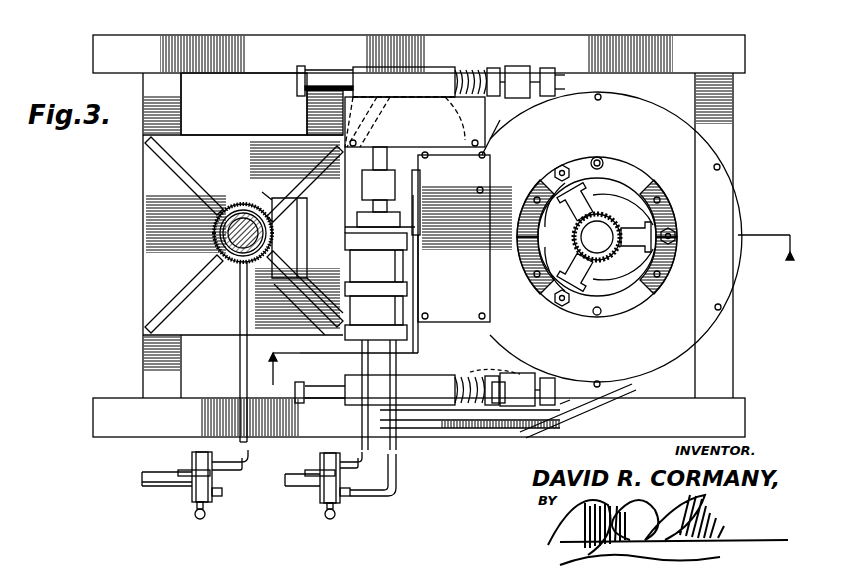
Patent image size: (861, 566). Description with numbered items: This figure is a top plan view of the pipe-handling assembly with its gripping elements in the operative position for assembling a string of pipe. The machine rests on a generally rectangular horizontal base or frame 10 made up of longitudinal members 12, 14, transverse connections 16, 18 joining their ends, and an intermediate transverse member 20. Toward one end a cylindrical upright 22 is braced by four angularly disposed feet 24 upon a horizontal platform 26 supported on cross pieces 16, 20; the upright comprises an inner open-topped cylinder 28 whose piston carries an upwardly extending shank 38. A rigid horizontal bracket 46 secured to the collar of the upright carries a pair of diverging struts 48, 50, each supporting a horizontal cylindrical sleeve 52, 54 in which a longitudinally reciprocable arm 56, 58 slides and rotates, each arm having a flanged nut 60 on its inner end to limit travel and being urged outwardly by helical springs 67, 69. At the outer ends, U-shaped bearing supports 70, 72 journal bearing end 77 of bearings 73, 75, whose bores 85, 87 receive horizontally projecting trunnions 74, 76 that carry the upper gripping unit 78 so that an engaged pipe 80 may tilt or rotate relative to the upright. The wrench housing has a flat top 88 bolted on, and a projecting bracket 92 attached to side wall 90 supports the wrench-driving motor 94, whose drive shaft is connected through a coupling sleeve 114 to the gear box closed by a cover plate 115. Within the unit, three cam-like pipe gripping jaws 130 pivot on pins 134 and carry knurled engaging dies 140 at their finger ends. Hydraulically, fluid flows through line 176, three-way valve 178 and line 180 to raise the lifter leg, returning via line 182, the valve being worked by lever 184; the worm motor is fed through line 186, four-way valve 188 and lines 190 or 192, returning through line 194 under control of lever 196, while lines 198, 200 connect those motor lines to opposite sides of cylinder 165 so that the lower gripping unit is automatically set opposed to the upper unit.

The base or frame 10 is at (686, 32).
The longitudinal member 12 is at (244, 45).
The longitudinal member 14 is at (110, 417).
The transverse connection 16 is at (146, 360).
The transverse connection 18 is at (716, 124).
The intermediate transverse member 20 is at (302, 112).
The cylindrical upright 22 is at (210, 232).
The feet 24 is at (165, 163).
The horizontal platform 26 is at (150, 254).
The inner hollow open-topped cylinder 28 is at (245, 208).
The shank 38 is at (232, 248).
The rigid horizontal bracket 46 is at (284, 242).
The strut 48 is at (327, 154).
The strut 50 is at (320, 284).
The cylindrical sleeve 52 is at (404, 97).
The cylindrical sleeve 54 is at (440, 378).
The reciprocable arm 56 is at (336, 70).
The reciprocable arm 58 is at (346, 404).
The flanged nut 60 is at (297, 68).
The helical spring 67 is at (464, 114).
The helical spring 69 is at (462, 406).
The U-shaped bearing support 70 is at (550, 70).
The U-shaped bearing support 72 is at (556, 400).
The bearing 73 is at (545, 60).
The trunnion 74 is at (518, 66).
The bearing 75 is at (522, 406).
The trunnion 76 is at (526, 386).
The bearing end 77 is at (489, 68).
The upper gripping unit 78 is at (735, 230).
The pipe 80 is at (620, 212).
The bore 85 is at (508, 138).
The bore 87 is at (498, 368).
The flat top 88 is at (742, 228).
The side wall 90 is at (422, 178).
The projecting bracket 92 is at (445, 218).
The wrench-driving motor 94 is at (400, 262).
The coupling sleeve 114 is at (386, 166).
The cover plate 115 is at (438, 72).
The pipe gripping jaws 130 is at (580, 180).
The pivot pin 134 is at (548, 302).
The engaging die 140 is at (610, 170).
The cylinder 165 is at (596, 380).
The line 176 is at (142, 479).
The three-way valve 178 is at (190, 496).
The line 180 is at (242, 368).
The return line 182 is at (180, 468).
The lever 184 is at (204, 518).
The line 186 is at (293, 486).
The four-way valve 188 is at (322, 502).
The line 190 is at (360, 445).
The line 192 is at (394, 470).
The line 194 is at (306, 486).
The lever 196 is at (336, 516).
The line 198 is at (488, 416).
The line 200 is at (574, 428).